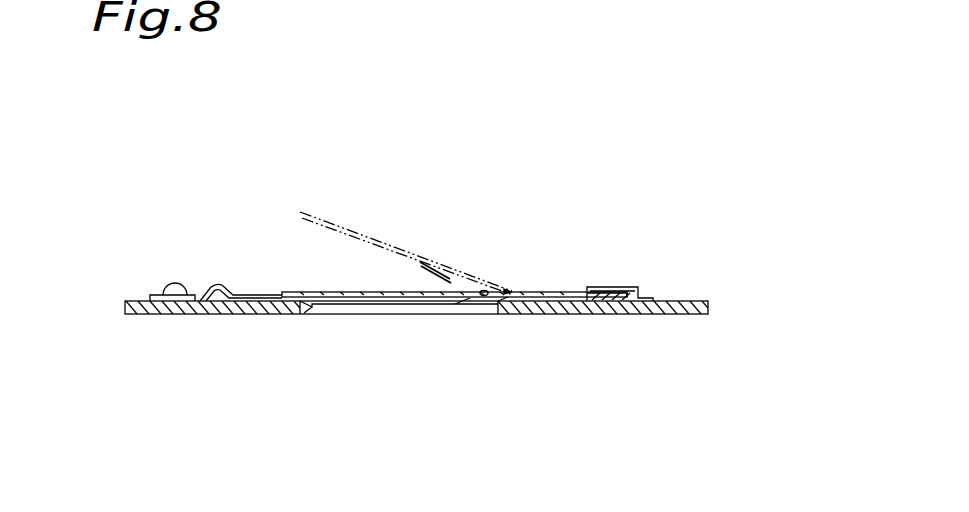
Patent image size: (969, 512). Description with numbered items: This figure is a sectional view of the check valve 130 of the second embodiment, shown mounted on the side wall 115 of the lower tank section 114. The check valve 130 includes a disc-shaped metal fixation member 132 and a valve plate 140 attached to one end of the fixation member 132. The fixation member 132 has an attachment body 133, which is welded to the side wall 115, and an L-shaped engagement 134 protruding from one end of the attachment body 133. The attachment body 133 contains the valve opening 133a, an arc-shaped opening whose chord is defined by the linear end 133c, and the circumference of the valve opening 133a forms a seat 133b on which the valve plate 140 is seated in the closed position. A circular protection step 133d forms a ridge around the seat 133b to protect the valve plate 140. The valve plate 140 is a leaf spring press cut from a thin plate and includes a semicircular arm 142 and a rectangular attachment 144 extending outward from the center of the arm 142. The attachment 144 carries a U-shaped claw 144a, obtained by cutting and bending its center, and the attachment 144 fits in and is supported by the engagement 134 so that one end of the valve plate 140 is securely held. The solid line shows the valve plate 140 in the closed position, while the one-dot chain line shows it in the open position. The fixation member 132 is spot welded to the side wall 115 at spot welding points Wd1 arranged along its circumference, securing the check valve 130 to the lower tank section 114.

The check valve 130 is at (512, 158).
The fixation member 132 is at (683, 398).
The attachment body 133 is at (535, 314).
The valve opening 133a is at (316, 314).
The seat 133b is at (480, 314).
The linear end 133c is at (448, 312).
The circular protection step 133d is at (218, 284).
The engagement 134 is at (646, 314).
The valve plate 140 is at (350, 292).
The arm 142 is at (452, 268).
The attachment 144 is at (628, 287).
The U-shaped claw 144a is at (600, 287).
The side wall 115 is at (686, 301).
The lower tank section 114 is at (413, 307).
The spot welding points Wd1 is at (175, 283).